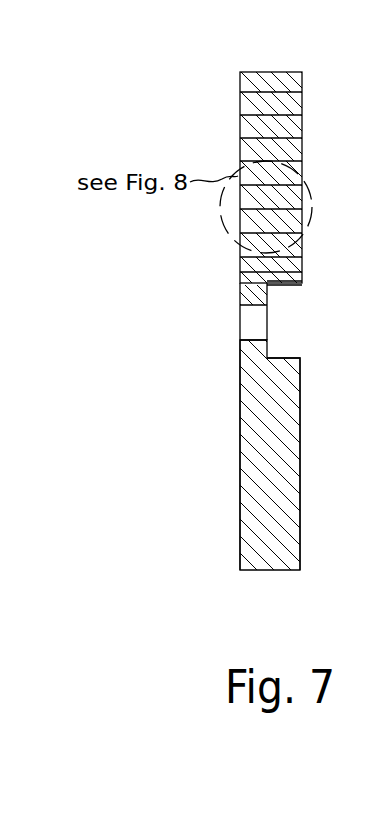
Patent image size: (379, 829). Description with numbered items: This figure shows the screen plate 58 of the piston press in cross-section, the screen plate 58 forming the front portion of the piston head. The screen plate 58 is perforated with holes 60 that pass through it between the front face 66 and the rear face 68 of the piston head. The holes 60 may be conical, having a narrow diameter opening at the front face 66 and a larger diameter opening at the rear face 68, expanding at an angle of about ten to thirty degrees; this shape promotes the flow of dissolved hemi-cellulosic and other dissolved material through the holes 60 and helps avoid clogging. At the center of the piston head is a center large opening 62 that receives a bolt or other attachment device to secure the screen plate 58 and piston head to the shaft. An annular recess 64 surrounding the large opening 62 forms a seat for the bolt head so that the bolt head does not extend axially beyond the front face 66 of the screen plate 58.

The screen plate 58 is at (270, 527).
The holes 60 is at (248, 89).
The center large opening 62 is at (243, 329).
The annular recess 64 is at (280, 295).
The front face 66 is at (300, 387).
The rear face 68 is at (240, 393).